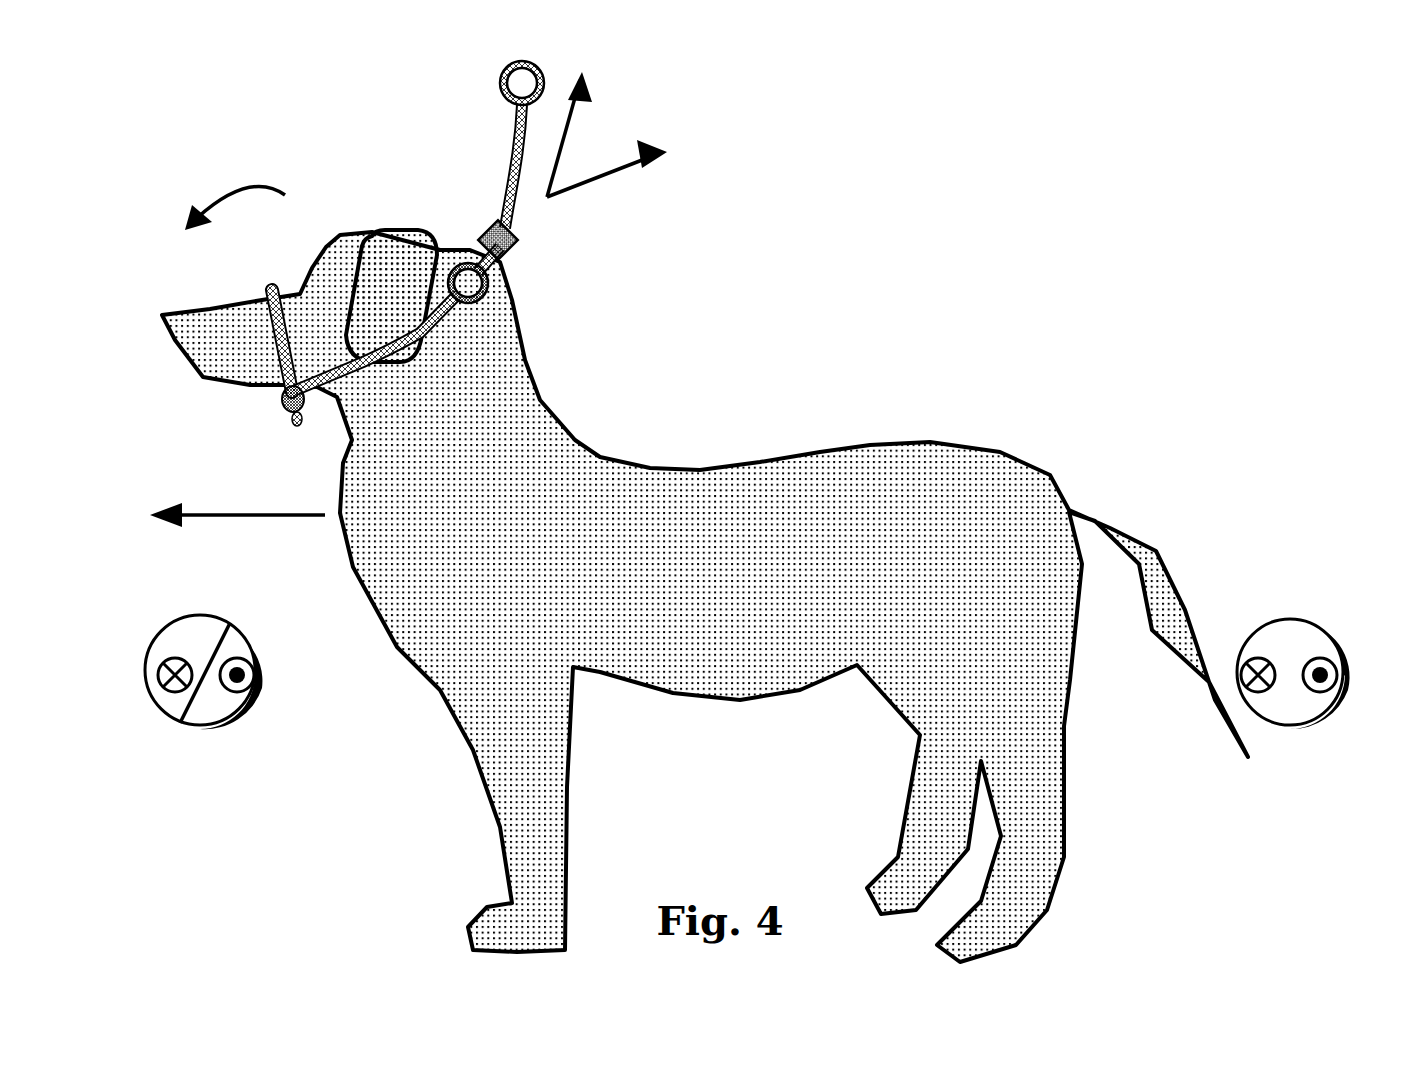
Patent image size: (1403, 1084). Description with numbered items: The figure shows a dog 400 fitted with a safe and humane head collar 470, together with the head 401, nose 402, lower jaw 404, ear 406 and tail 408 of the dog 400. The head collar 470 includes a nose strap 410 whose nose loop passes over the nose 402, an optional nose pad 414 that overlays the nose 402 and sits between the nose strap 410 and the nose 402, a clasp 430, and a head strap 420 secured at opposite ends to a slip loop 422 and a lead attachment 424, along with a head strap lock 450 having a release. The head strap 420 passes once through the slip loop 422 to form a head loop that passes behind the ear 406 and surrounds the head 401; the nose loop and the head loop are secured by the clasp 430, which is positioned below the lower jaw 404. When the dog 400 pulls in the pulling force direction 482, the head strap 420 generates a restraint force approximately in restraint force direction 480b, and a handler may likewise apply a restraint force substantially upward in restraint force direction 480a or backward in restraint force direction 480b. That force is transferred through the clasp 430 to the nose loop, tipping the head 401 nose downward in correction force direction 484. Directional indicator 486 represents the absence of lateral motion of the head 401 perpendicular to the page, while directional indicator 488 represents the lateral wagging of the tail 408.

The dog 400 is at (852, 276).
The head 401 is at (337, 205).
The nose 402 is at (232, 342).
The lower jaw 404 is at (256, 390).
The ear 406 is at (391, 296).
The tail 408 is at (1186, 572).
The nose strap 410 is at (274, 286).
The nose pad 414 is at (264, 285).
The head strap 420 is at (513, 122).
The slip loop 422 is at (478, 304).
The lead attachment 424 is at (500, 86).
The clasp 430 is at (280, 404).
The head strap lock 450 is at (518, 242).
The head collar 470 is at (466, 240).
The restraint force direction 480a is at (590, 118).
The restraint force direction 480b is at (624, 175).
The pulling force direction 482 is at (257, 524).
The correction force direction 484 is at (235, 187).
The directional indicator 486 is at (205, 742).
The directional indicator 488 is at (1290, 738).